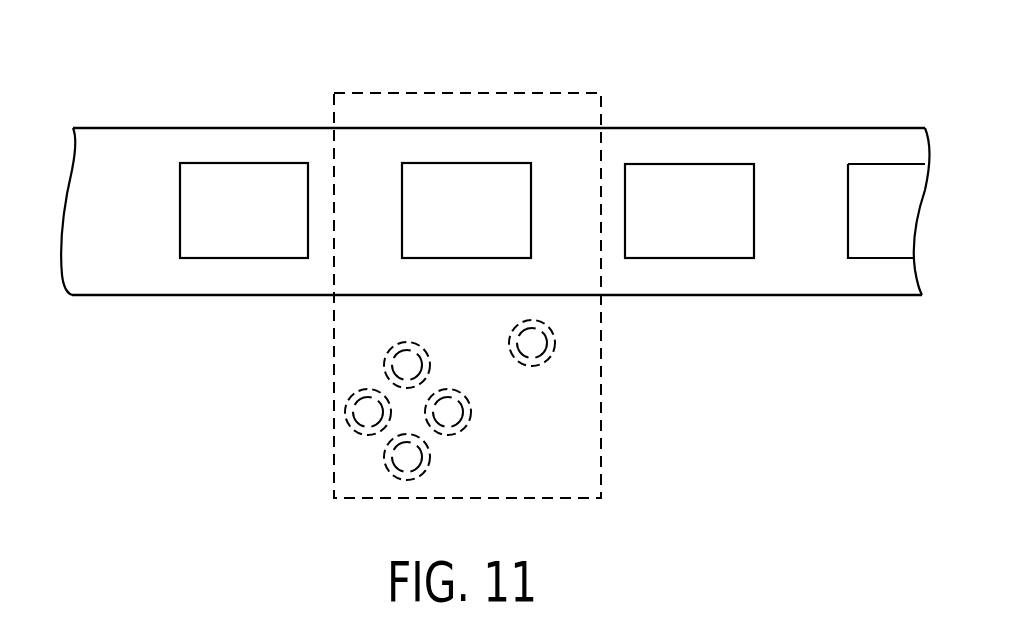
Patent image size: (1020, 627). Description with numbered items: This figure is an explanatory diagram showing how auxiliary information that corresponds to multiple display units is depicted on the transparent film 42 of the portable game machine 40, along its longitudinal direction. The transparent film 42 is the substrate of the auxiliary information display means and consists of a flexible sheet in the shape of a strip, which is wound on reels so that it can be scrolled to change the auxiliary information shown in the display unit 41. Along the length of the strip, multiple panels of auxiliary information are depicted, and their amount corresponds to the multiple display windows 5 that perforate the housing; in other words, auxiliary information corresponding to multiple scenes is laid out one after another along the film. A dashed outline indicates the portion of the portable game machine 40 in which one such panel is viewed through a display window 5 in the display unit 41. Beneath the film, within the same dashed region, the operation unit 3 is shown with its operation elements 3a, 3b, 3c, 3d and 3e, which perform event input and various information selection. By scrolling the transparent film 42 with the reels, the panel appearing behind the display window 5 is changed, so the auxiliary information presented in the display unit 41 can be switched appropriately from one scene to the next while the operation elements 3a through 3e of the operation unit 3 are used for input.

The operation unit 3 is at (560, 437).
The operation element 3a is at (540, 365).
The operation element 3b is at (418, 345).
The operation element 3c is at (428, 457).
The operation element 3d is at (472, 408).
The operation element 3e is at (368, 389).
The display window 5 is at (471, 153).
The portable game machine 40 is at (510, 93).
The display unit 41 is at (414, 197).
The transparent film 42 is at (812, 147).